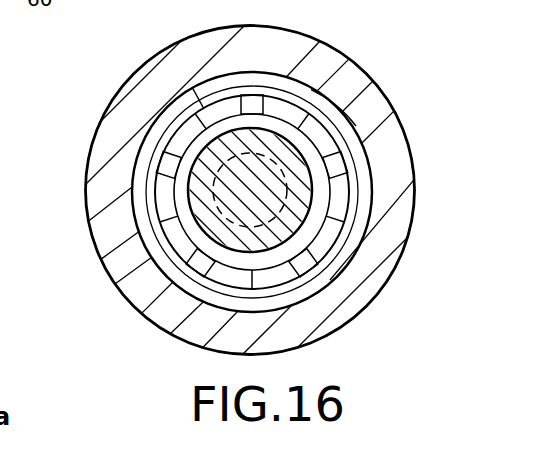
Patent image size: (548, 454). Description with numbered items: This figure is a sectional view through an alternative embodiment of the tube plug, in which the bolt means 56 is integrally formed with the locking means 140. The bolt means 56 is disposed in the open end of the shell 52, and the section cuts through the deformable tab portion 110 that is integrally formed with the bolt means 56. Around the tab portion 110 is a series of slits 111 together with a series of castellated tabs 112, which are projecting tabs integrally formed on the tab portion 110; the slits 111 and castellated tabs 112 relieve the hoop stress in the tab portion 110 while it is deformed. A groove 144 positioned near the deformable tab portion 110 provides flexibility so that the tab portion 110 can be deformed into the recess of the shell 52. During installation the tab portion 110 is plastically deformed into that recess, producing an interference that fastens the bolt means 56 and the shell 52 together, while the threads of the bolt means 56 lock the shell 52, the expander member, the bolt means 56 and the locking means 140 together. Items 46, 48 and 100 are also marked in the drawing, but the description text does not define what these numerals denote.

The housing 46 is at (96, 128).
The shell 52 is at (88, 197).
The bolt means 56 is at (347, 110).
The shaft 48 is at (314, 191).
The bearing assembly 100 is at (187, 89).
The deformable tab portion 110 is at (292, 108).
The slits 111 is at (250, 95).
The castellated tabs 112 is at (266, 279).
The locking means 140 is at (163, 266).
The groove 144 is at (312, 226).